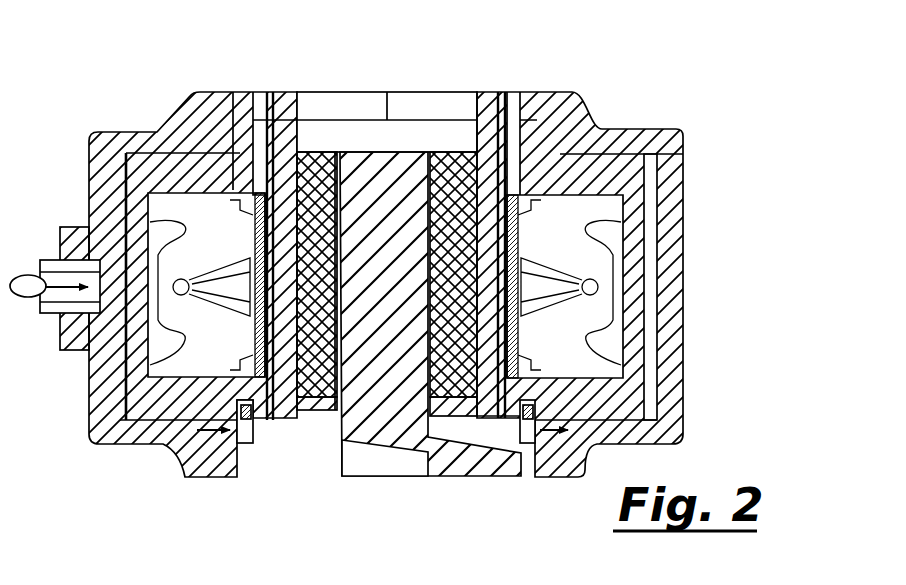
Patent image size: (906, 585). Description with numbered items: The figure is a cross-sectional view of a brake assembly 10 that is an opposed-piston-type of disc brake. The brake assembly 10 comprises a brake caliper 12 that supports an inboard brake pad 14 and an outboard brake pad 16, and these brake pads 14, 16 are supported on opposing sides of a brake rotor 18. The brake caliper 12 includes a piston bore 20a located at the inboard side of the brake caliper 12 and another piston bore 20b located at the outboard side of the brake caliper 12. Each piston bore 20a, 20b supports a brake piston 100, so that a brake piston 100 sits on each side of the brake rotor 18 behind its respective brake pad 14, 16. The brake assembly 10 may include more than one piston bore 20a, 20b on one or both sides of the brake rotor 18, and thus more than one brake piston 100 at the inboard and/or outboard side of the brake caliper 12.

The brake assembly 10 is at (388, 254).
The brake caliper 12 is at (672, 204).
The inboard brake pad 14 is at (453, 177).
The outboard brake pad 16 is at (316, 187).
The brake rotor 18 is at (370, 227).
The piston bore 20a is at (603, 337).
The piston bore 20b is at (163, 333).
The brake piston 100 is at (168, 212).